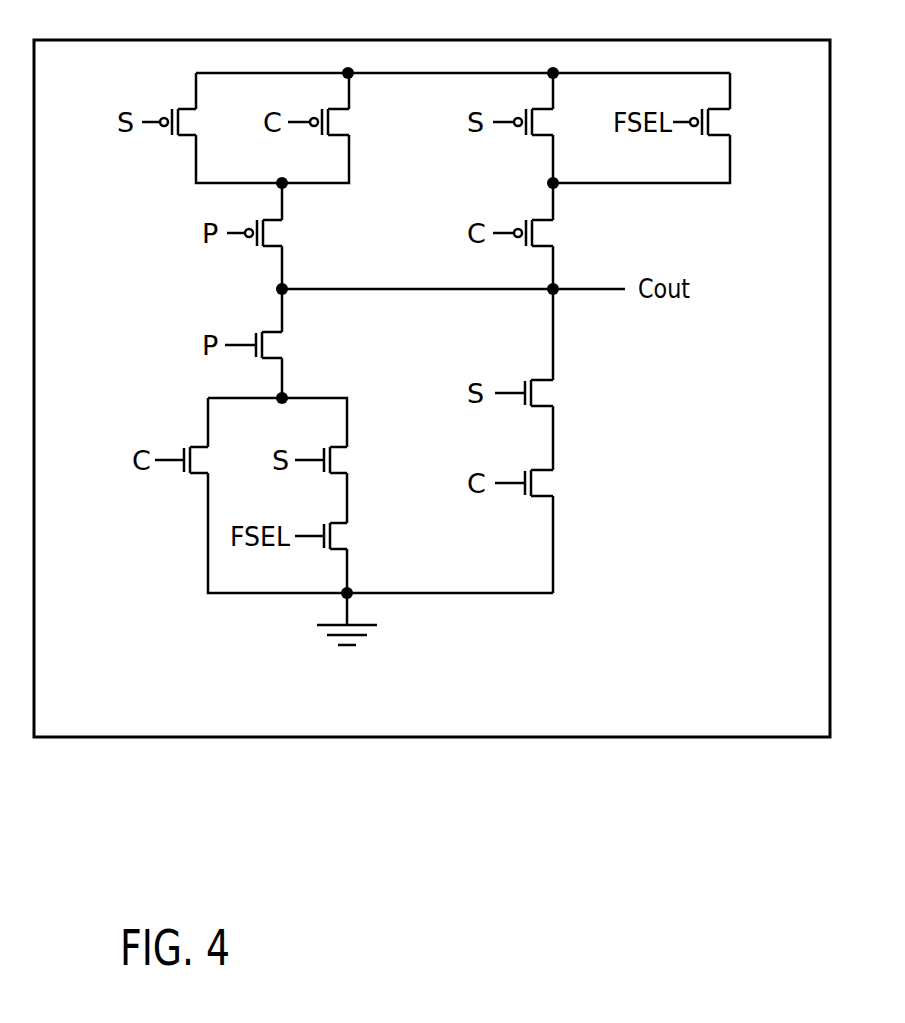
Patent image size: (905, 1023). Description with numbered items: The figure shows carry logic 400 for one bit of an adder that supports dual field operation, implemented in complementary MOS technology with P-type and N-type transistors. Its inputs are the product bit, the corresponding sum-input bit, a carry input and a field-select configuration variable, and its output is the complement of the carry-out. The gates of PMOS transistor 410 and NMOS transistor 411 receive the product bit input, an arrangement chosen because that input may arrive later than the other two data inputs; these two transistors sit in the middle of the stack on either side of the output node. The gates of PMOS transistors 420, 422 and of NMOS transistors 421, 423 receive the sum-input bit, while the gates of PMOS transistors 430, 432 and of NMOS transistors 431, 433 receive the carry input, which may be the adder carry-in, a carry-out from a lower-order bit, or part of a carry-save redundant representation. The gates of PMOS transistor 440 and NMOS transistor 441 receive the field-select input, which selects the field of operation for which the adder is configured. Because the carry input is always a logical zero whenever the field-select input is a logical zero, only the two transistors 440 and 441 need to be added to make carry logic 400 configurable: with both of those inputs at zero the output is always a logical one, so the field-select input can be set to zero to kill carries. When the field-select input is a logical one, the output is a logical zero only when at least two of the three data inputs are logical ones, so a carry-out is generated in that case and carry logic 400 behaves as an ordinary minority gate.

The carry logic 400 is at (432, 388).
The PMOS transistor 410 is at (276, 233).
The NMOS transistor 411 is at (274, 345).
The PMOS transistor 420 is at (190, 122).
The NMOS transistor 421 is at (341, 460).
The PMOS transistor 422 is at (544, 122).
The NMOS transistor 423 is at (545, 393).
The PMOS transistor 430 is at (339, 122).
The NMOS transistor 431 is at (203, 460).
The PMOS transistor 432 is at (546, 233).
The NMOS transistor 433 is at (545, 483).
The PMOS transistor 440 is at (722, 122).
The NMOS transistor 441 is at (341, 536).